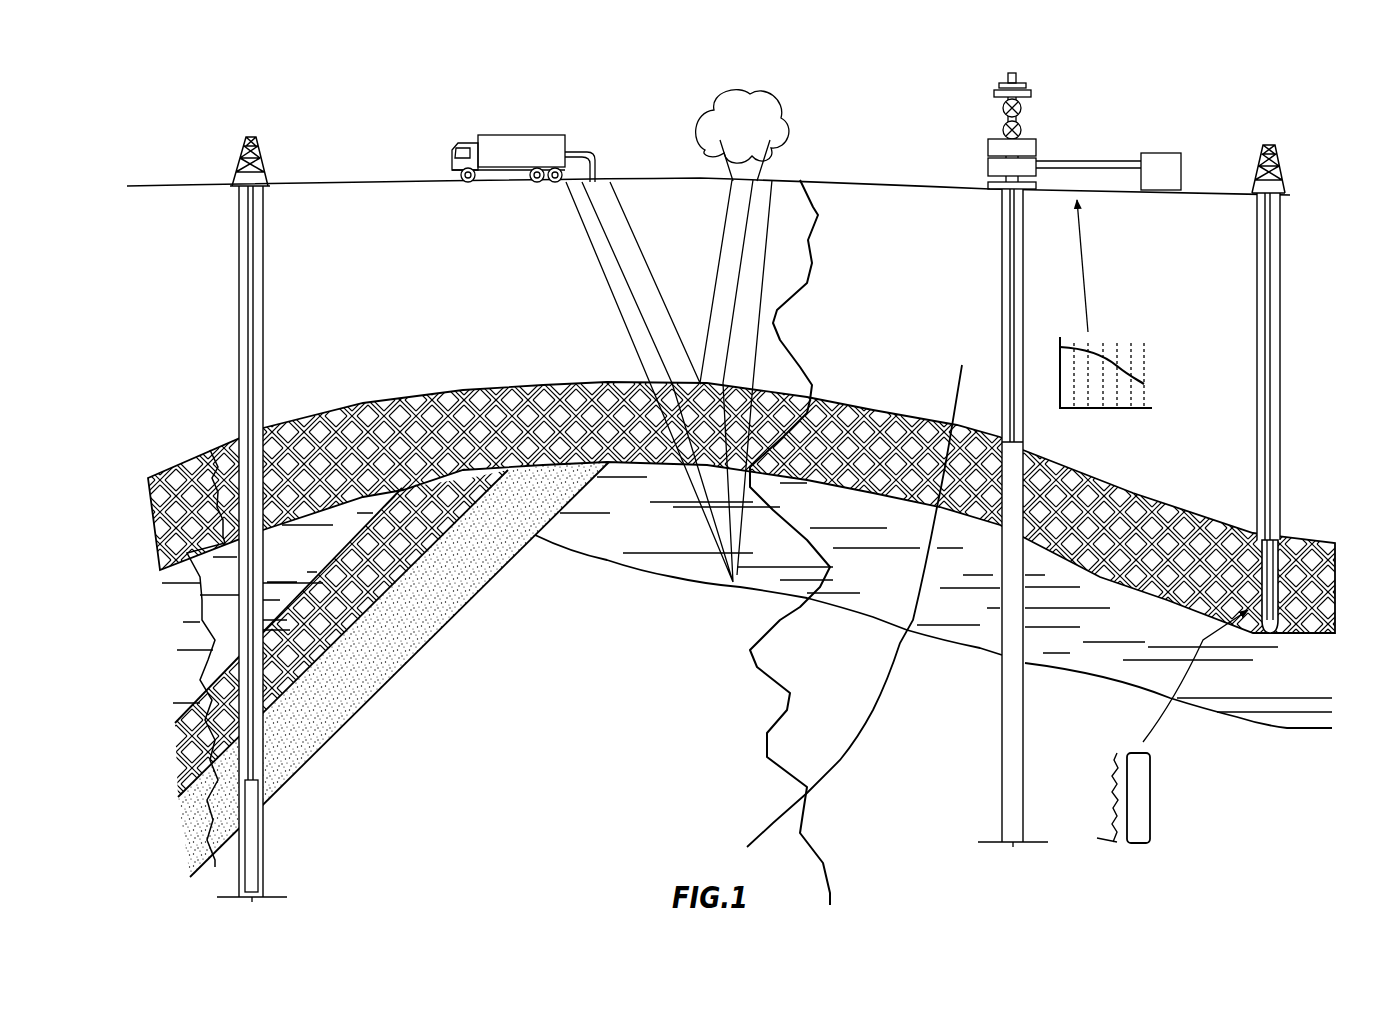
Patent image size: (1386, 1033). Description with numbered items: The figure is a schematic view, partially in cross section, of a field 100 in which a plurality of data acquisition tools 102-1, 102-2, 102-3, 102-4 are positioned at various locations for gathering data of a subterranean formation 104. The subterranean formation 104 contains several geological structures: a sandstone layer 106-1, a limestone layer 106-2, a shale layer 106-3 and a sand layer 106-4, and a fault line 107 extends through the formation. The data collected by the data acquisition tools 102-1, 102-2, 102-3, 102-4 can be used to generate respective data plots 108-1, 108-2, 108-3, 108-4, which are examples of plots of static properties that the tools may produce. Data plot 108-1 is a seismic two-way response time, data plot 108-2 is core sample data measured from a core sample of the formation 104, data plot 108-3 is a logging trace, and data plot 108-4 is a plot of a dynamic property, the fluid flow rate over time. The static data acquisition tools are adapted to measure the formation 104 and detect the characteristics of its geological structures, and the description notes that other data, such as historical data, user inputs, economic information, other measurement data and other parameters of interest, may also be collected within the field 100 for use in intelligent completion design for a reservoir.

The field 100 is at (1207, 140).
The data acquisition tool 102-1 is at (483, 135).
The data acquisition tool 102-2 is at (1275, 573).
The data acquisition tool 102-3 is at (263, 840).
The data acquisition tool 102-4 is at (1027, 520).
The subterranean formation 104 is at (591, 671).
The sandstone layer 106-1 is at (400, 453).
The limestone layer 106-2 is at (320, 563).
The shale layer 106-3 is at (390, 583).
The sand layer 106-4 is at (430, 638).
The fault line 107 is at (957, 383).
The data plot 108-1 is at (787, 707).
The data plot 108-2 is at (1112, 767).
The data plot 108-3 is at (200, 650).
The data plot 108-4 is at (1108, 410).